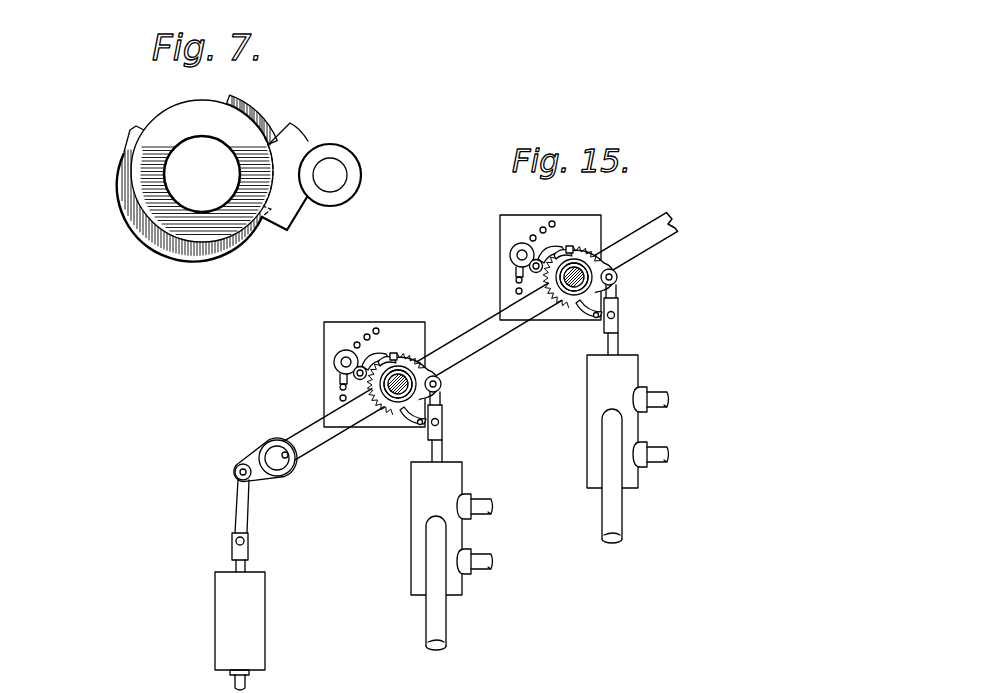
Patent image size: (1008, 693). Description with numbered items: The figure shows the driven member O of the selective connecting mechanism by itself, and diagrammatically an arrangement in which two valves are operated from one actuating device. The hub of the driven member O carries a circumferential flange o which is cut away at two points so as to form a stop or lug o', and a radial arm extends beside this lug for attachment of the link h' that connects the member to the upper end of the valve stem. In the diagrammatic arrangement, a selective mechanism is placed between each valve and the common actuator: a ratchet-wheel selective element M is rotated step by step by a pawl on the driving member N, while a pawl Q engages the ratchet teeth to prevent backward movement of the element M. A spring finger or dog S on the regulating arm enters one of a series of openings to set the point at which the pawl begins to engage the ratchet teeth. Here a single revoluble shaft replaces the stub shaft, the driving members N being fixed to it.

In FIG. 7, the flange o is at (173, 167).
In FIG. 7, the stop or lug o' is at (256, 107).
In FIG. 15, the driving member N is at (370, 378).
In FIG. 15, the rotatable selective element M is at (400, 350).
In FIG. 15, the driven member O is at (402, 398).
In FIG. 15, the spring finger or dog S is at (338, 360).
In FIG. 15, the pawl Q is at (413, 425).
In FIG. 15, the link h' is at (555, 373).